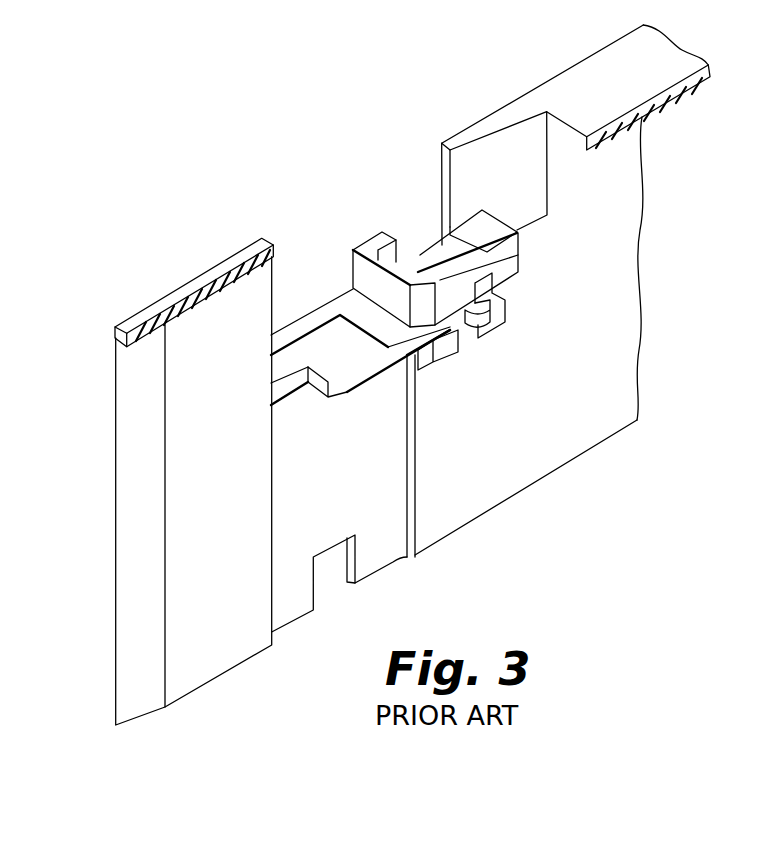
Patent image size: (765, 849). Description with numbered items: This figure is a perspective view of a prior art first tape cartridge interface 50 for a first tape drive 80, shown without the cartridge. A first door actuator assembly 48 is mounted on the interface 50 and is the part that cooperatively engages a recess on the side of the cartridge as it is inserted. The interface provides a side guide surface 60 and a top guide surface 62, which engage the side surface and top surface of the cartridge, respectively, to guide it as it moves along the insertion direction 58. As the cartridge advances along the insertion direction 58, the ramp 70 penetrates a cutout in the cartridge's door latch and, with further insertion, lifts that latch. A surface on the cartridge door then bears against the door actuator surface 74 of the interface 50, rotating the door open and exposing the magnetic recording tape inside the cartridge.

The first door actuator assembly 48 is at (512, 275).
The first tape cartridge interface 50 is at (114, 424).
The insertion direction 58 is at (572, 529).
The side guide surface 60 is at (236, 431).
The top guide surface 62 is at (662, 110).
The ramp 70 is at (348, 373).
The door actuator surface 74 is at (370, 268).
The first tape drive 80 is at (176, 249).